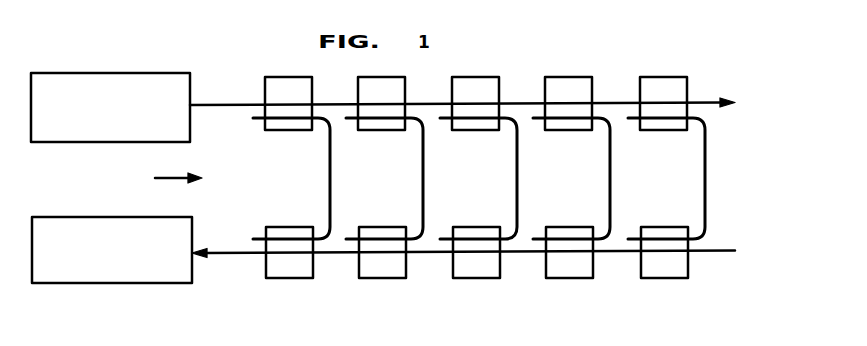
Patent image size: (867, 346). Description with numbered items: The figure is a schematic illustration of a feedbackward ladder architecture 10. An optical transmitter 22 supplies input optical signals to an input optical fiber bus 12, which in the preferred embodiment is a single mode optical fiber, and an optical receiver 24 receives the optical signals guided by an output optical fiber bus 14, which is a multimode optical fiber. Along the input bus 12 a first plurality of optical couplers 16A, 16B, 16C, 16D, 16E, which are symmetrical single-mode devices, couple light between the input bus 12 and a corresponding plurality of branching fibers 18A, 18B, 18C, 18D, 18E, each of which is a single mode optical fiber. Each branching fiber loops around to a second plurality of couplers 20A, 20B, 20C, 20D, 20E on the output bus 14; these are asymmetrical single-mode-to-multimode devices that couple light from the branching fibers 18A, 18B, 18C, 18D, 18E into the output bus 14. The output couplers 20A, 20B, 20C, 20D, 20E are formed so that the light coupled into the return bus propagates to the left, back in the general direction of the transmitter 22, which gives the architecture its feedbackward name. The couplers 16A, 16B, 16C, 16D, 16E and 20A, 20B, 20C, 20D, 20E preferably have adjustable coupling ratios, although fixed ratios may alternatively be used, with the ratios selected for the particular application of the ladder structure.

The ladder architecture 10 is at (164, 183).
The input optical fiber bus 12 is at (230, 107).
The output optical fiber bus 14 is at (240, 252).
The optical coupler 16A is at (302, 132).
The optical coupler 16B is at (395, 132).
The optical coupler 16C is at (489, 132).
The optical coupler 16D is at (582, 132).
The optical coupler 16E is at (677, 132).
The branching fiber 18A is at (330, 177).
The branching fiber 18B is at (423, 177).
The branching fiber 18C is at (517, 175).
The branching fiber 18D is at (610, 175).
The branching fiber 18E is at (705, 173).
The optical coupler 20A is at (295, 280).
The optical coupler 20B is at (388, 280).
The optical coupler 20C is at (482, 280).
The optical coupler 20D is at (575, 280).
The optical coupler 20E is at (670, 280).
The optical transmitter 22 is at (80, 143).
The optical receiver 24 is at (128, 285).